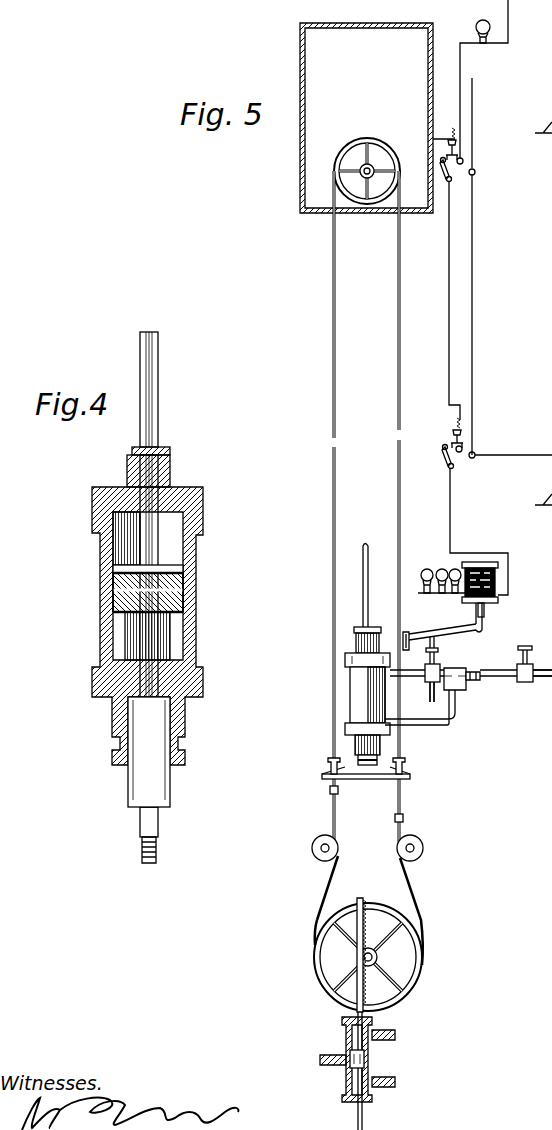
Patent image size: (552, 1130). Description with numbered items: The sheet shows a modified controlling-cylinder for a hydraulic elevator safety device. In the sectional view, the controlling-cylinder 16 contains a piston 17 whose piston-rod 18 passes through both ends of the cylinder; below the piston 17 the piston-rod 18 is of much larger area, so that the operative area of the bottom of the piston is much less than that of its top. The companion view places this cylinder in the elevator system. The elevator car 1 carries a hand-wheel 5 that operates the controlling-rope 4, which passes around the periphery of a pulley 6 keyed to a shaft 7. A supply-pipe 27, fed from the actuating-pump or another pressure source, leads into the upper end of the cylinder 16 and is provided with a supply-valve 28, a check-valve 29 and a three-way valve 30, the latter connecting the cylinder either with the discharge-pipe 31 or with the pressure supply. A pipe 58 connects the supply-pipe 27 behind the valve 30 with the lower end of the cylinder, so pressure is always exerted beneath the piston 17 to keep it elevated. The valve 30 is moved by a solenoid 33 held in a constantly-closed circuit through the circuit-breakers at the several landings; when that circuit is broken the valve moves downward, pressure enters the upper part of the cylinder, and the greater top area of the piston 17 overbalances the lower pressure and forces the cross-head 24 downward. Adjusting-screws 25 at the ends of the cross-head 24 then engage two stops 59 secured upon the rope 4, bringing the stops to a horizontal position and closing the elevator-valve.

In FIG. 5, the elevator car 1 is at (366, 118).
In FIG. 5, the controlling-rope 4 is at (370, 568).
In FIG. 5, the hand-wheel 5 is at (395, 133).
In FIG. 5, the pulley 6 is at (423, 965).
In FIG. 5, the shaft 7 is at (378, 958).
In FIG. 4, the controlling-cylinder 16 is at (197, 605).
In FIG. 5, the controlling-cylinder 16 is at (347, 699).
In FIG. 4, the piston 17 is at (157, 548).
In FIG. 4, the piston-rod 18 is at (197, 570).
In FIG. 5, the piston-rod 18 is at (368, 606).
In FIG. 5, the cross-head 24 is at (366, 783).
In FIG. 5, the adjusting-screws 25 is at (326, 779).
In FIG. 5, the supply-pipe 27 is at (516, 664).
In FIG. 5, the supply-valve 28 is at (524, 683).
In FIG. 5, the check-valve 29 is at (476, 684).
In FIG. 5, the three-way valve 30 is at (436, 666).
In FIG. 5, the discharge-pipe 31 is at (422, 705).
In FIG. 5, the solenoid 33 is at (480, 562).
In FIG. 5, the pipe 58 is at (457, 704).
In FIG. 5, the stops 59 is at (340, 794).